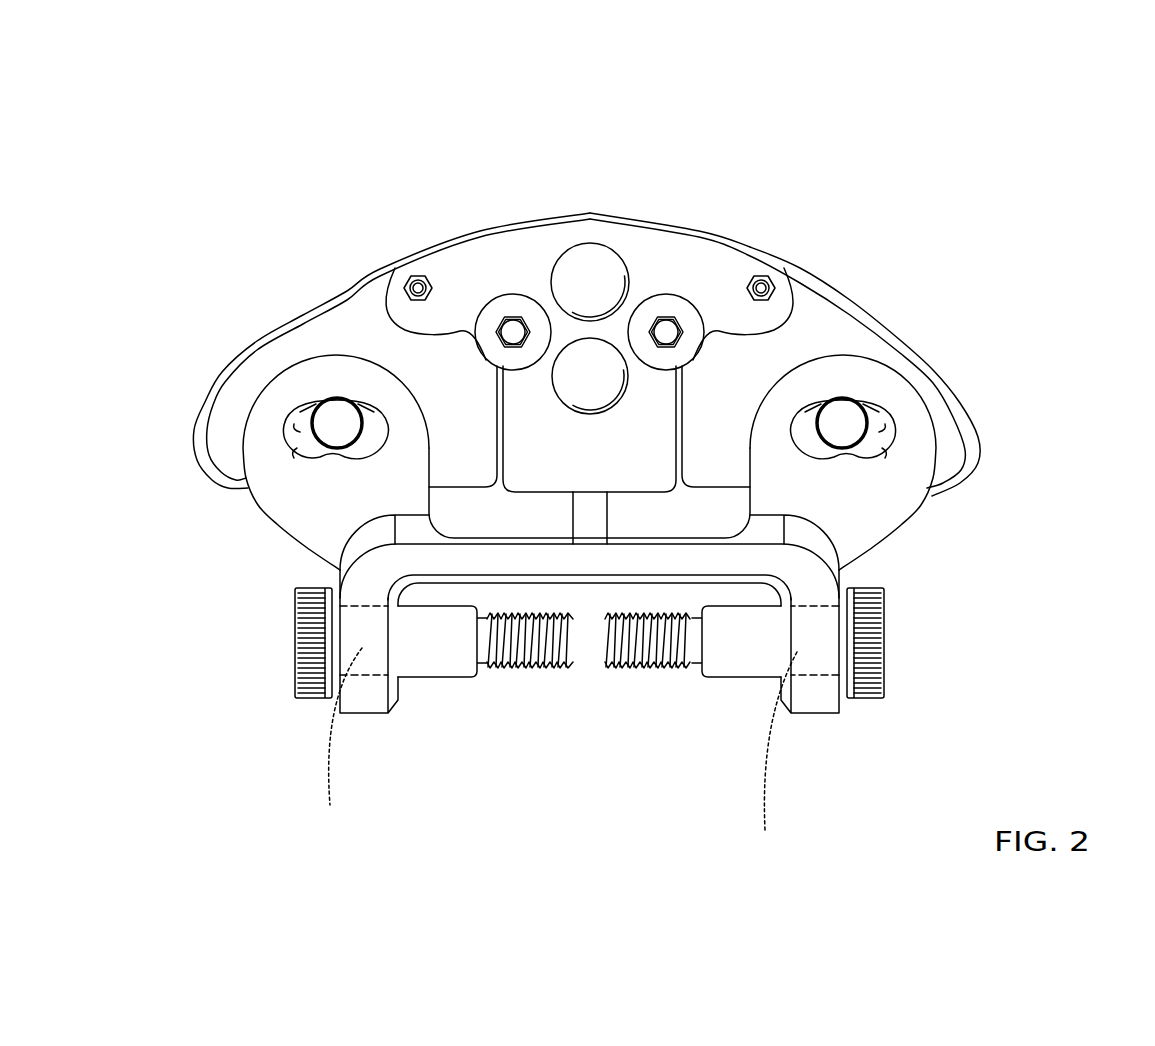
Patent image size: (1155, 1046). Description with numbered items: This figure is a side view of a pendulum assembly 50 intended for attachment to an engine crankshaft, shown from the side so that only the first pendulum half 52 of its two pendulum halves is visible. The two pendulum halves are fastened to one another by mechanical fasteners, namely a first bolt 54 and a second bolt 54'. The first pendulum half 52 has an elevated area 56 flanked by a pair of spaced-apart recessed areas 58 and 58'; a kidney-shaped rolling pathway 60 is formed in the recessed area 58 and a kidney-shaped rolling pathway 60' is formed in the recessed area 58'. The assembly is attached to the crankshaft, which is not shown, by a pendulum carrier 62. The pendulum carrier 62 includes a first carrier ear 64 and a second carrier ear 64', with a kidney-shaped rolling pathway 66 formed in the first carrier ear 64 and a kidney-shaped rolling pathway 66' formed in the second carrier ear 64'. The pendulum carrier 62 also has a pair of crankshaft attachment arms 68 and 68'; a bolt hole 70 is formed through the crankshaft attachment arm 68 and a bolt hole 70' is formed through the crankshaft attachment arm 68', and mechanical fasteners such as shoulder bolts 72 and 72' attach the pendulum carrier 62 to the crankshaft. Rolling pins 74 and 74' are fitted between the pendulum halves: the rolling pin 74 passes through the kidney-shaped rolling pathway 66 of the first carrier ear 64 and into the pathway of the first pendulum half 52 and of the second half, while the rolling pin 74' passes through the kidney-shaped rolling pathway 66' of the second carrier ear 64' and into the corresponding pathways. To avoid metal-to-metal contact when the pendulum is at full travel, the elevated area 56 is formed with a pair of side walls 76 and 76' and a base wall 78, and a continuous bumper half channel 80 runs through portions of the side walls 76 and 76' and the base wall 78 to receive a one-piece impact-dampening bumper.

The pendulum assembly 50 is at (910, 197).
The first pendulum half 52 is at (838, 333).
The first bolt 54 is at (507, 211).
The second bolt 54' is at (667, 225).
The elevated area 56 is at (567, 233).
The recessed area 58 is at (404, 260).
The recessed area 58' is at (863, 315).
The kidney-shaped rolling pathway 60 is at (240, 472).
The kidney-shaped rolling pathway 60' is at (949, 441).
The pendulum carrier 62 is at (315, 527).
The first carrier ear 64 is at (262, 460).
The second carrier ear 64' is at (903, 462).
The kidney-shaped rolling pathway 66 is at (224, 529).
The kidney-shaped rolling pathway 66' is at (940, 549).
The crankshaft attachment arm 68 is at (371, 700).
The crankshaft attachment arm 68' is at (812, 707).
The bolt hole 70 is at (339, 745).
The bolt hole 70' is at (768, 758).
The shoulder bolt 72 is at (485, 689).
The shoulder bolt 72' is at (693, 689).
The rolling pin 74 is at (246, 310).
The rolling pin 74' is at (974, 406).
The side wall 76 is at (406, 216).
The side wall 76' is at (810, 241).
The base wall 78 is at (607, 544).
The continuous bumper half channel 80 is at (573, 544).